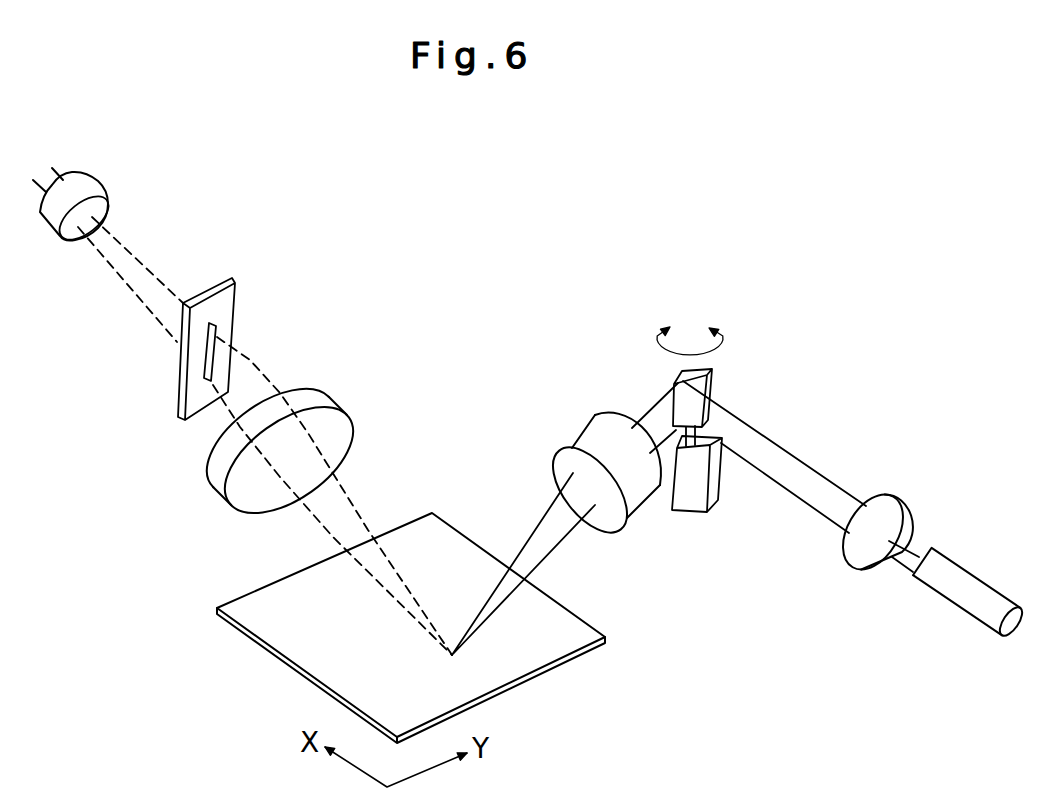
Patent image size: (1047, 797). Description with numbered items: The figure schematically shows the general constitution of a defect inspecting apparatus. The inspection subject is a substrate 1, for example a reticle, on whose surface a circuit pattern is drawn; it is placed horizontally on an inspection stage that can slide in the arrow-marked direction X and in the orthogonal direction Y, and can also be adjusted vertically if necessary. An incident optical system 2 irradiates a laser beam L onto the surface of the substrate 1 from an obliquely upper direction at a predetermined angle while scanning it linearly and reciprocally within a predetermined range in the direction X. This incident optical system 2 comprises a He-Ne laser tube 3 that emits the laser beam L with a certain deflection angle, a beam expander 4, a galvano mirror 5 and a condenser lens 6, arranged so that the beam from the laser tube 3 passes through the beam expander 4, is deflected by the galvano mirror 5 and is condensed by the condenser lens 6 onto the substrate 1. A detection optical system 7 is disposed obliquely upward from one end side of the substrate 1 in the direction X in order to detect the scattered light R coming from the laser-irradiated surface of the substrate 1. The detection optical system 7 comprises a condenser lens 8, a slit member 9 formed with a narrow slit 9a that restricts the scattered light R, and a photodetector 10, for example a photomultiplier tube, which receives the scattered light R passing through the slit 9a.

The substrate 1 is at (527, 643).
The incident optical system 2 is at (866, 465).
The laser tube 3 is at (977, 577).
The beam expander 4 is at (900, 507).
The galvano mirror 5 is at (715, 382).
The condenser lens 6 is at (570, 437).
The detection optical system 7 is at (194, 446).
The condenser lens 8 is at (333, 403).
The slit member 9 is at (250, 334).
The slit 9a is at (215, 350).
The photodetector 10 is at (98, 187).
The laser beam L is at (563, 542).
The scattered light R is at (318, 512).